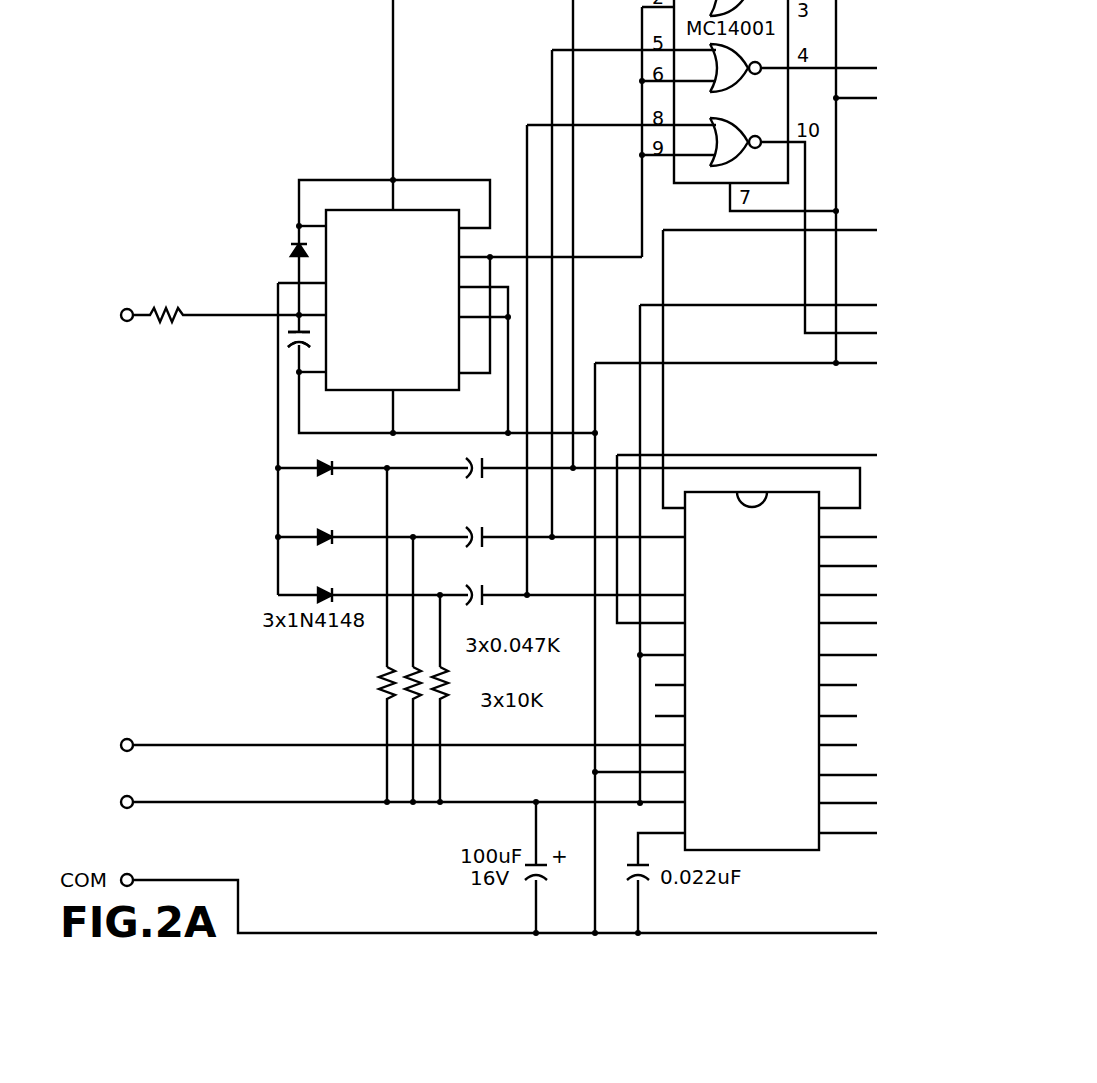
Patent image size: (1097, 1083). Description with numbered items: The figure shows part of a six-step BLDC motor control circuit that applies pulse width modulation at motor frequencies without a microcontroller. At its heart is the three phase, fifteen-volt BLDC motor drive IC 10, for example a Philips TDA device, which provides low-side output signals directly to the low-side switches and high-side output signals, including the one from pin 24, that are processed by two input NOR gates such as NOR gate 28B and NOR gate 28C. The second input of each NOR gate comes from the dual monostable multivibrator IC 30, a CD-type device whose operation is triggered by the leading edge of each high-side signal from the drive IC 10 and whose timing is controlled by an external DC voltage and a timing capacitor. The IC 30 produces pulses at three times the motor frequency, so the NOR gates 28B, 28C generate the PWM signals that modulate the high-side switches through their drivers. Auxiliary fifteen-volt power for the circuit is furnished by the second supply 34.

The dual monostable multivibrator IC 30 is at (362, 210).
The two input NOR gate 28B is at (727, 92).
The two input NOR gate 28C is at (728, 168).
The BLDC motor drive IC 10 is at (752, 852).
The pin 24 is at (130, 739).
The second supply 34 is at (130, 809).